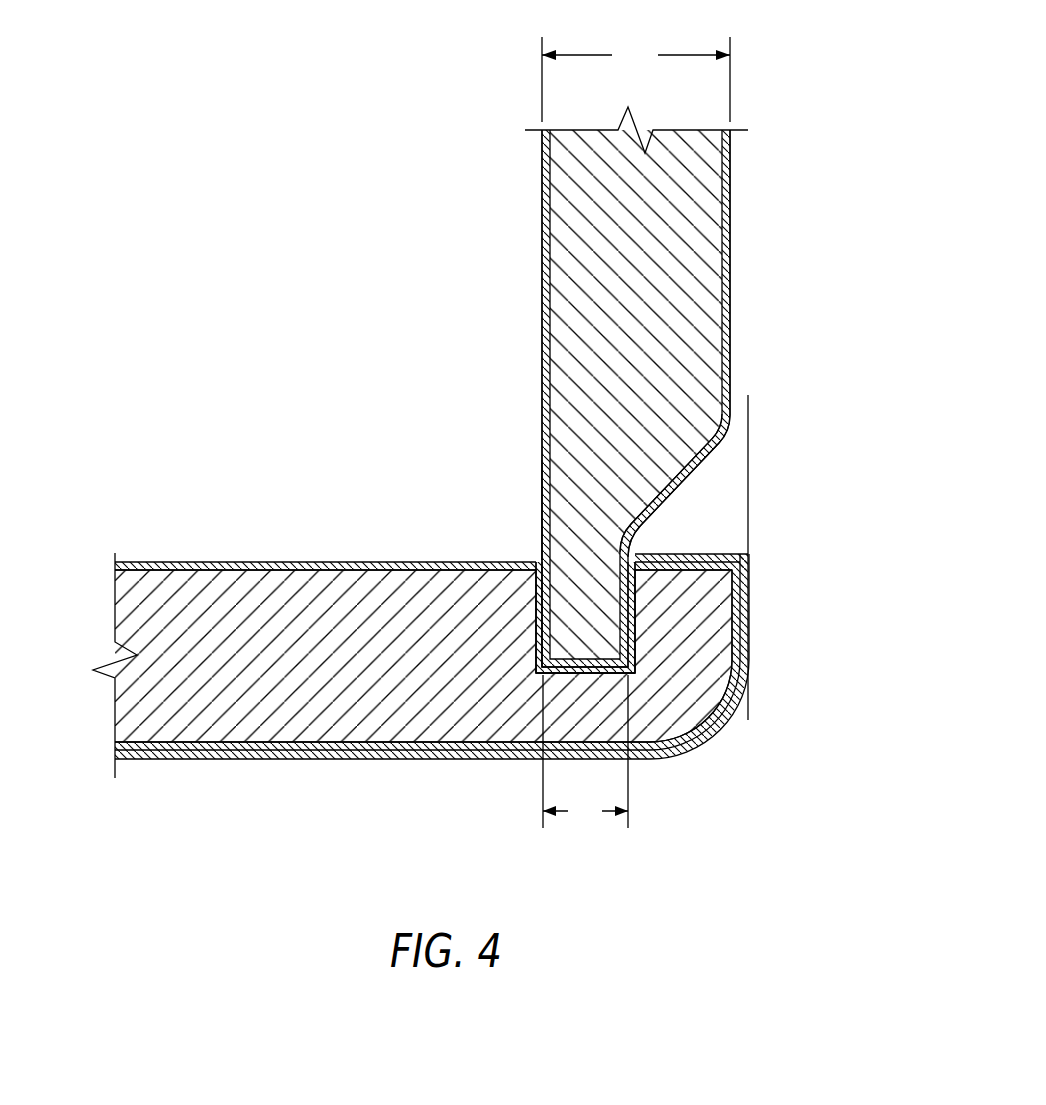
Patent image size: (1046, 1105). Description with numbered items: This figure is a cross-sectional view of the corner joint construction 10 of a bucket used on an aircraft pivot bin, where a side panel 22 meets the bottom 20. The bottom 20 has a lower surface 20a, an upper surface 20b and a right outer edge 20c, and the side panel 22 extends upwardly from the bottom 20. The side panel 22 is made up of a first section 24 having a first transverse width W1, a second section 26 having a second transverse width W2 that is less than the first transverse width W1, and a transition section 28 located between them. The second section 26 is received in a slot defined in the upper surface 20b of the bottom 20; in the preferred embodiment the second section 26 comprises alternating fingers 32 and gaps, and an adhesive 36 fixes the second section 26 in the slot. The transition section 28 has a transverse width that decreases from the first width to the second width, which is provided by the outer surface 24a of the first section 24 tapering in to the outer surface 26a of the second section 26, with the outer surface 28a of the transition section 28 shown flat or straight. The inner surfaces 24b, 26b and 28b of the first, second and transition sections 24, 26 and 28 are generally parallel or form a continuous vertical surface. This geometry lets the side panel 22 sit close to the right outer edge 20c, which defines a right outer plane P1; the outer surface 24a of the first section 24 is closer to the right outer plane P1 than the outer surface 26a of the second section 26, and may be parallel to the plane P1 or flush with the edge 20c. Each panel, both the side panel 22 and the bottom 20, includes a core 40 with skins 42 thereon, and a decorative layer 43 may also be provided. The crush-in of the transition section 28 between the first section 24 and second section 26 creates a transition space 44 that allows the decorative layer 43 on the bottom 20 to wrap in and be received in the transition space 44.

The corner joint construction 10 is at (645, 832).
The bottom 20 is at (220, 795).
The lower surface 20a is at (178, 762).
The upper surface 20b is at (222, 562).
The right outer edge 20c is at (745, 596).
The side panel 22 is at (462, 316).
The first section 24 is at (700, 287).
The outer surface of the first section 24a is at (732, 335).
The inner surface of the first section 24b is at (542, 380).
The second section 26 is at (563, 603).
The outer surface of the second section 26a is at (633, 598).
The inner surface of the second section 26b is at (537, 623).
The transition section 28 is at (655, 482).
The outer surface of the transition section 28a is at (677, 485).
The inner surface of the transition section 28b is at (540, 503).
The finger 32 is at (613, 650).
The adhesive 36 is at (535, 651).
The core 40 is at (565, 225).
The skin 42 is at (546, 204).
The decorative layer 43 is at (712, 727).
The transition space 44 is at (686, 530).
The right outer plane P1 is at (750, 688).
The first transverse width W1 is at (636, 79).
The second transverse width W2 is at (585, 751).